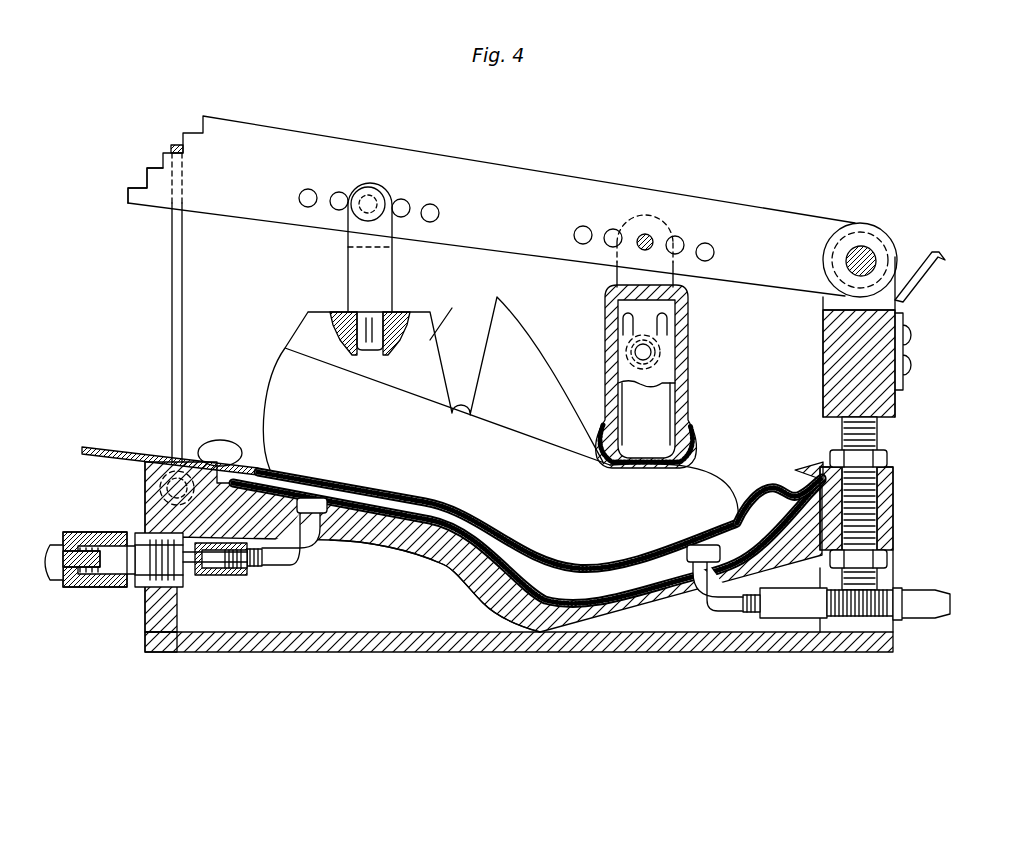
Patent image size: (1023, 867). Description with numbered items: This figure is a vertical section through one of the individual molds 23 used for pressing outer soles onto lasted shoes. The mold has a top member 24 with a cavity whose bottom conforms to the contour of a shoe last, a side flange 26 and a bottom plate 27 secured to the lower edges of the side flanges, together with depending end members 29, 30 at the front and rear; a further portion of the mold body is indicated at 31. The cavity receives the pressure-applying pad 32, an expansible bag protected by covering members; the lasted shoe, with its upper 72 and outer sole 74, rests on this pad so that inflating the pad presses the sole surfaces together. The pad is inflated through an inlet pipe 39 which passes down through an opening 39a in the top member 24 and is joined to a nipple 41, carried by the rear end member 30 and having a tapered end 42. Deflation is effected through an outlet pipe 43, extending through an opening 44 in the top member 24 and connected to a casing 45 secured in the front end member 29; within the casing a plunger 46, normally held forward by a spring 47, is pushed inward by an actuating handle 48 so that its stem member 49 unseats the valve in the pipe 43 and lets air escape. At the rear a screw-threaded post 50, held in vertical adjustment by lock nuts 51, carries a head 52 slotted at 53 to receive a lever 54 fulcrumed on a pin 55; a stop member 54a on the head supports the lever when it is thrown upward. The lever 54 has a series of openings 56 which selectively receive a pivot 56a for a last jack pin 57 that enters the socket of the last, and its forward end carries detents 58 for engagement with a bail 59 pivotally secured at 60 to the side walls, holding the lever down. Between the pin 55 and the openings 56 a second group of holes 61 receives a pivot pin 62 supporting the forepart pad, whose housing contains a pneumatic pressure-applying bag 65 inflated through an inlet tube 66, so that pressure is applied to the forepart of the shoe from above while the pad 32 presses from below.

The mold 23 is at (778, 206).
The top member 24 is at (440, 540).
The side flange 26 is at (340, 640).
The bottom plate 27 is at (415, 645).
The front end member 29 is at (150, 585).
The rear end member 30 is at (893, 575).
The lower surface of base body 31 is at (482, 603).
The pressure-applying pad 32 is at (768, 486).
The inlet pipe 39 is at (735, 608).
The opening 39a is at (687, 584).
The nipple 41 is at (820, 595).
The tapered end 42 is at (940, 594).
The outlet pipe 43 is at (308, 562).
The opening 44 is at (380, 526).
The casing 45 is at (220, 578).
The plunger 46 is at (88, 580).
The spring 47 is at (100, 545).
The actuating handle 48 is at (48, 550).
The stem member 49 is at (212, 552).
The screw-threaded post 50 is at (882, 430).
The lock nuts 51 is at (890, 458).
The head 52 is at (900, 402).
The slot 53 is at (875, 300).
The lever 54 is at (838, 222).
The stop member 54a is at (950, 258).
The pin 55 is at (873, 250).
The openings 56 is at (430, 208).
The pivot 56a is at (372, 198).
The last jack pin 57 is at (356, 272).
The detents 58 is at (140, 185).
The bail 59 is at (176, 147).
The pivot 60 is at (160, 482).
The holes 61 is at (705, 244).
The pivot pin 62 is at (652, 237).
The pneumatic pressure-applying bag 65 is at (690, 440).
The inlet tube 66 is at (650, 352).
The upper 72 is at (472, 448).
The outer sole 74 is at (705, 525).